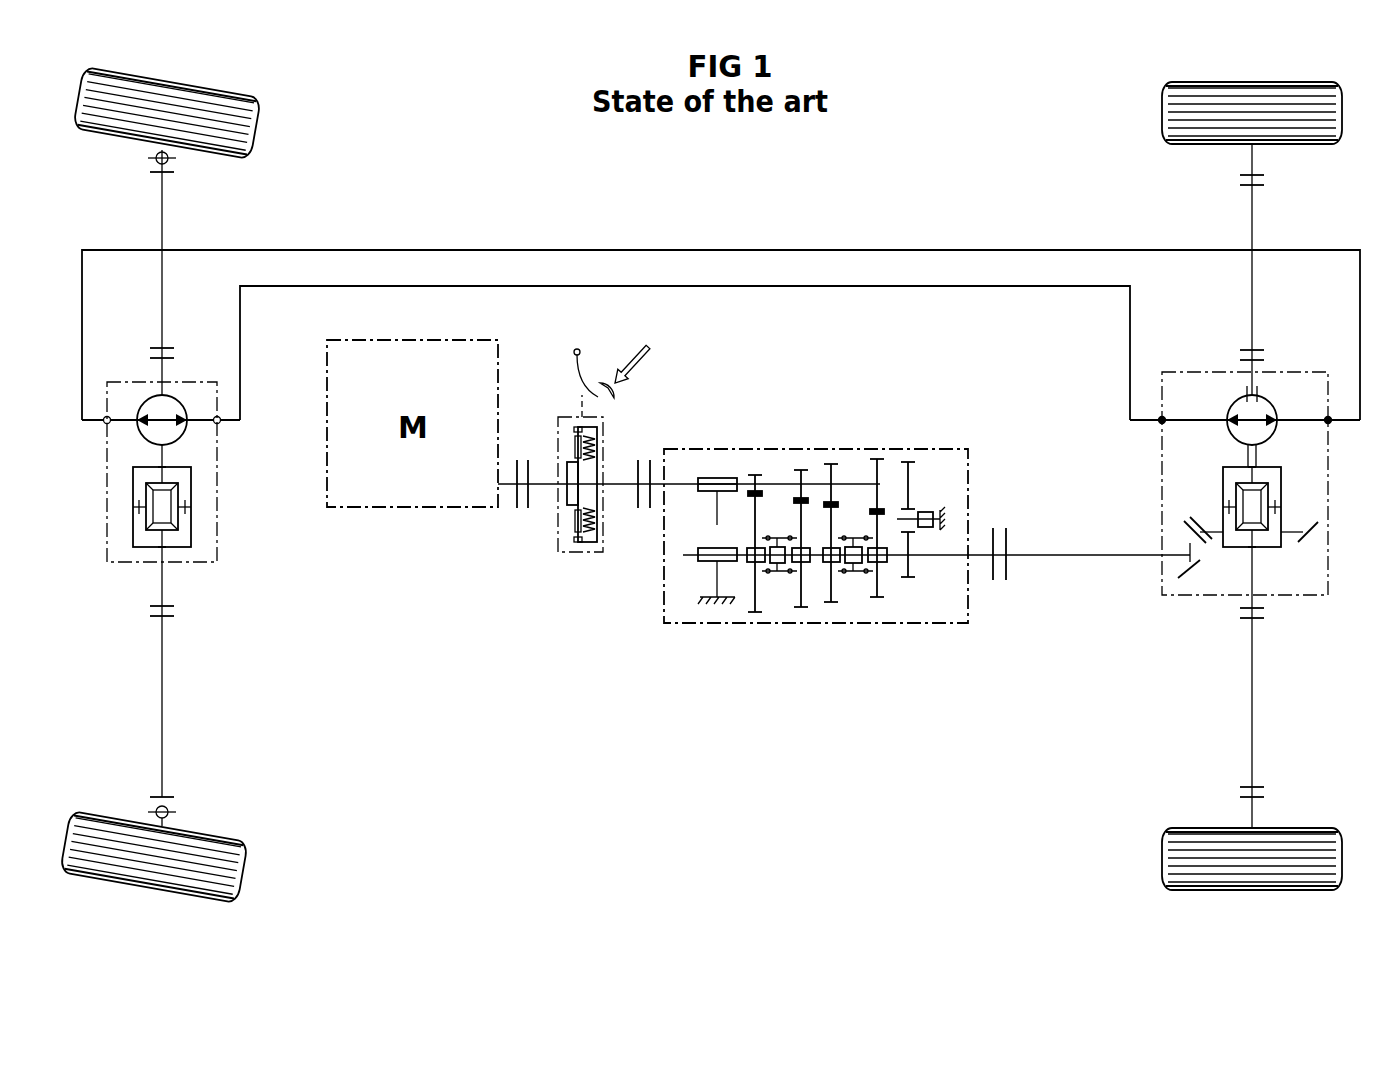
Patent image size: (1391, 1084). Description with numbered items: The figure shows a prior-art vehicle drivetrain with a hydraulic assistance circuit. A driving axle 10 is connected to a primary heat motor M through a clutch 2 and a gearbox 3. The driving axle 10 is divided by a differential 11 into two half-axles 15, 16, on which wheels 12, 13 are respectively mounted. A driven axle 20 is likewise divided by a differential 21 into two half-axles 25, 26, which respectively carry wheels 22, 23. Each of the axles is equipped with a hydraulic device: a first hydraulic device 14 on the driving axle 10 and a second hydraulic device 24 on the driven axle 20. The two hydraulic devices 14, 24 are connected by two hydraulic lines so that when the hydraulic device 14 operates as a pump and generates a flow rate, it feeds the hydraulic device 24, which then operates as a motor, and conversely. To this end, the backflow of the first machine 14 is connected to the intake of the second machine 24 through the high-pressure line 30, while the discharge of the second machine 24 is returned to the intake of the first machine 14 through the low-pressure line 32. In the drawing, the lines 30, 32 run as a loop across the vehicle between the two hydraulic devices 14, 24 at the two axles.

The clutch 2 is at (551, 513).
The gearbox 3 is at (658, 574).
The driving axle 10 is at (1248, 512).
The differential 11 is at (1294, 485).
The wheel 12 is at (1307, 126).
The wheel 13 is at (1308, 874).
The hydraulic device 14 is at (1224, 444).
The half-axle 15 is at (1250, 220).
The half-axle 16 is at (1250, 720).
The driven axle 20 is at (161, 509).
The differential 21 is at (202, 485).
The wheel 22 is at (217, 136).
The wheel 23 is at (220, 883).
The hydraulic device 24 is at (134, 444).
The half-axle 25 is at (161, 218).
The half-axle 26 is at (160, 718).
The high-pressure line 30 is at (938, 250).
The low-pressure line 32 is at (938, 286).